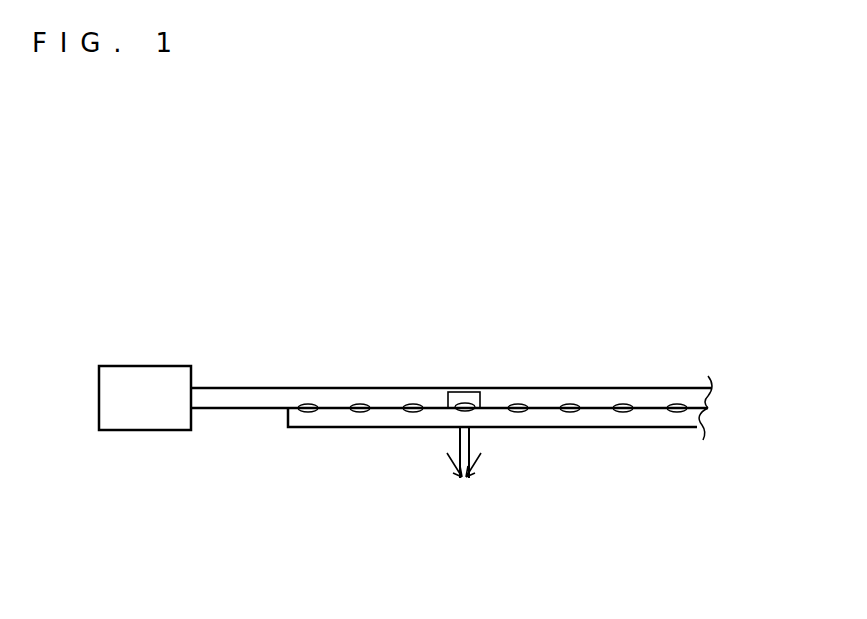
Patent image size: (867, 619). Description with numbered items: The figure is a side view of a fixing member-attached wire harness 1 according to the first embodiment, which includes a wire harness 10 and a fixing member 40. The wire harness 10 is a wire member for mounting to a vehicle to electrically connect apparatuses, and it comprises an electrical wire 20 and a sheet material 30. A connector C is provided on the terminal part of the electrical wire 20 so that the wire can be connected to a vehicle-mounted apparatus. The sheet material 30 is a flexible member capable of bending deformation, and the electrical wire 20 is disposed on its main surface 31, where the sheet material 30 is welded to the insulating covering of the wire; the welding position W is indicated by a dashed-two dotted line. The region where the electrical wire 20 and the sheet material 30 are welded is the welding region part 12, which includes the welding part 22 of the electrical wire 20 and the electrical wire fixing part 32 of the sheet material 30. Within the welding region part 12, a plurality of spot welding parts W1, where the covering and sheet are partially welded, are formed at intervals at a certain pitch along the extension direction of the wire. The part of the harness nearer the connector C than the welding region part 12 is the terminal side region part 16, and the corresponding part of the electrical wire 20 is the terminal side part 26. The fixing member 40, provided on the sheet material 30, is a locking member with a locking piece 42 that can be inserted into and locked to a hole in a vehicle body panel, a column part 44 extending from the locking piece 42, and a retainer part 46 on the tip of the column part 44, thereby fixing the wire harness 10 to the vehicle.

The fixing member-attached wire harness 1 is at (203, 172).
The connector C is at (107, 401).
The terminal side region part 16 is at (236, 386).
The terminal side part 26 is at (232, 409).
The welding region part 12 is at (537, 368).
The welding part 22 is at (594, 392).
The main surface 31 is at (645, 406).
The electrical wire fixing part 32 is at (550, 428).
The electrical wire 20 is at (713, 394).
The sheet material 30 is at (702, 415).
The wire harness 10 is at (764, 380).
The welding position W is at (381, 342).
The spot welding part W1 is at (308, 404).
The retainer part 46 is at (448, 400).
The fixing member 40 is at (513, 535).
The column part 44 is at (464, 480).
The locking piece 42 is at (447, 470).